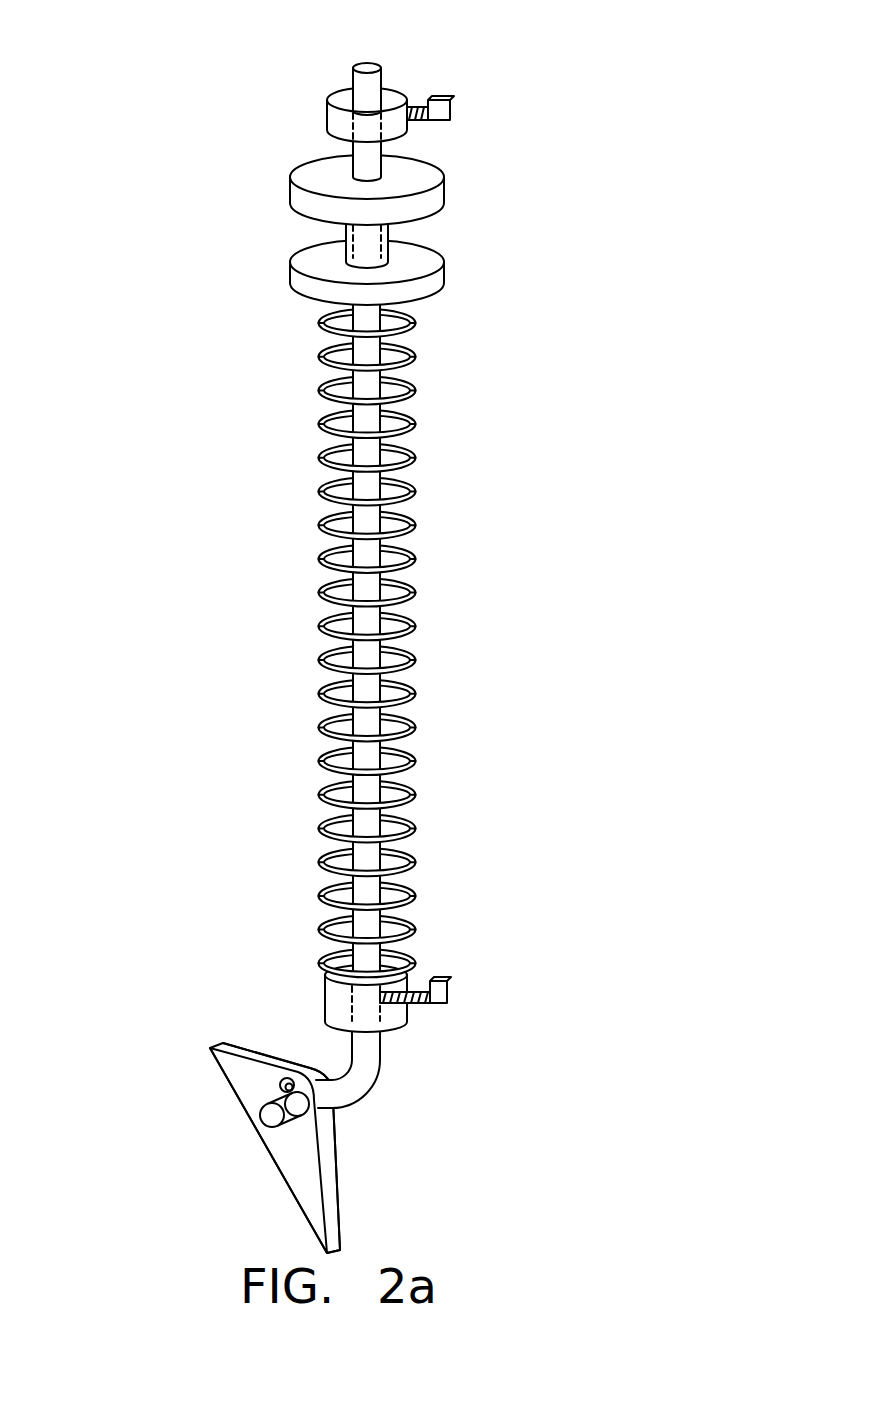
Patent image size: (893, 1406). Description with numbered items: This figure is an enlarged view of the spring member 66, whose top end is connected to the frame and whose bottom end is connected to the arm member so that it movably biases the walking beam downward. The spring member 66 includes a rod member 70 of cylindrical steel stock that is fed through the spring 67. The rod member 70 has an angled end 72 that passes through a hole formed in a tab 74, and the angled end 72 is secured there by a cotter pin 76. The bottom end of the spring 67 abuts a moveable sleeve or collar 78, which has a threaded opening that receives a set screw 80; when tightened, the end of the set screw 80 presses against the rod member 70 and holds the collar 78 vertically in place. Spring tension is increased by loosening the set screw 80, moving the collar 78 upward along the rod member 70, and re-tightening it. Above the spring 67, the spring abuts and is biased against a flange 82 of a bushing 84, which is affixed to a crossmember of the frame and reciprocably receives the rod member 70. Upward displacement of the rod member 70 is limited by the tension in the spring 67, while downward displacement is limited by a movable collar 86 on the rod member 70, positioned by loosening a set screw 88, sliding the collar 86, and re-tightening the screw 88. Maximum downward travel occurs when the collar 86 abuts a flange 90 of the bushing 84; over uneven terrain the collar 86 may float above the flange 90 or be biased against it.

The spring member 66 is at (232, 466).
The spring 67 is at (418, 403).
The rod member 70 is at (372, 525).
The angled end 72 is at (353, 1080).
The tab 74 is at (243, 1080).
The cotter pin 76 is at (262, 1090).
The moveable sleeve or collar 78 is at (333, 992).
The set screw 80 is at (447, 993).
The flange 82 is at (435, 282).
The bushing 84 is at (452, 213).
The movable collar 86 is at (405, 97).
The set screw 88 is at (450, 115).
The flange 90 is at (307, 218).